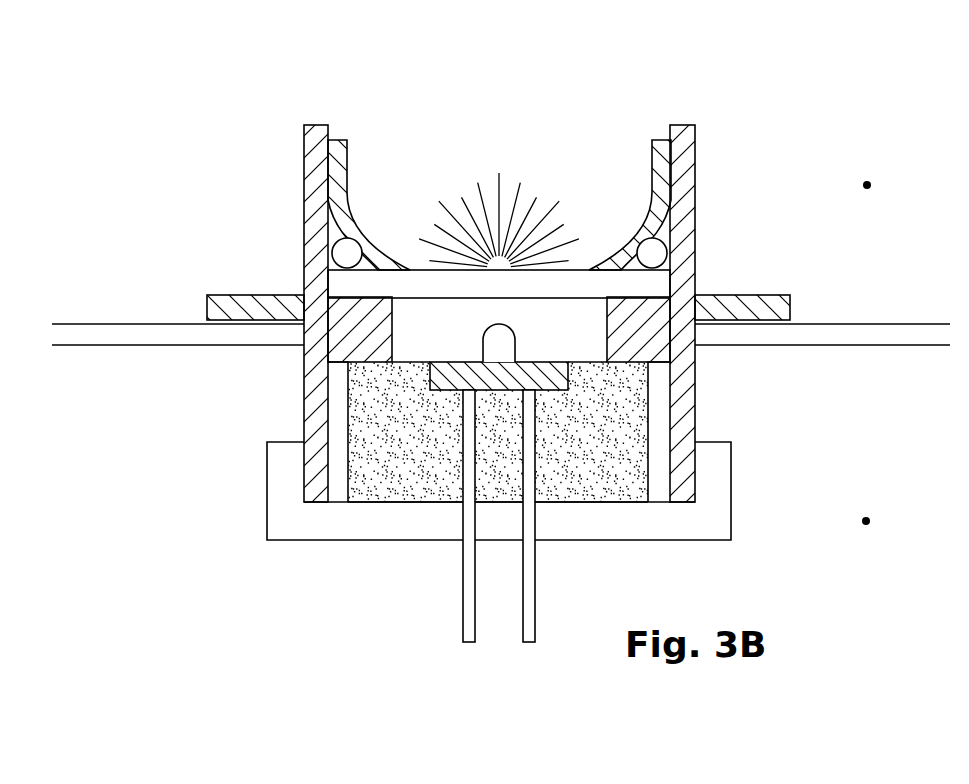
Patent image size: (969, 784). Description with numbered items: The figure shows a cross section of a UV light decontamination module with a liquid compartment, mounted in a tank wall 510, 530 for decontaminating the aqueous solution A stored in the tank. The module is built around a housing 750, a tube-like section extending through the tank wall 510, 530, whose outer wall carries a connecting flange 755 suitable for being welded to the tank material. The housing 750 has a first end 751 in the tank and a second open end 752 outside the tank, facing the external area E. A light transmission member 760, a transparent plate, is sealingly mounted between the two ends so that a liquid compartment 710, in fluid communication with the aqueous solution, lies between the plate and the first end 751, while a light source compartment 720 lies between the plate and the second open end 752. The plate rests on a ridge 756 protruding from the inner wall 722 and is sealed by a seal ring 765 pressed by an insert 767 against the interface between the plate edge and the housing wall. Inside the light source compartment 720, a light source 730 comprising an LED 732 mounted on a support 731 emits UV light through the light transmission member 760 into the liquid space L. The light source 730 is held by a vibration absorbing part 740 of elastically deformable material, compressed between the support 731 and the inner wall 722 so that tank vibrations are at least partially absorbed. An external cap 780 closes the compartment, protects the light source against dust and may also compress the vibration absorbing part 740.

The tank wall 510 is at (142, 333).
The tank wall 530 is at (822, 334).
The liquid compartment 710 is at (543, 152).
The light source compartment 720 is at (342, 417).
The inner wall 722 is at (670, 385).
The light source 730 is at (575, 343).
The support 731 is at (552, 390).
The LED 732 is at (499, 347).
The vibration absorbing part 740 is at (392, 458).
The housing 750 is at (302, 152).
The first end 751 is at (693, 120).
The second open end 752 is at (658, 500).
The connecting flange 755 is at (775, 295).
The ridge 756 is at (375, 330).
The light transmission member 760 is at (437, 283).
The seal ring 765 is at (347, 253).
The insert 767 is at (657, 167).
The external cap 780 is at (633, 522).